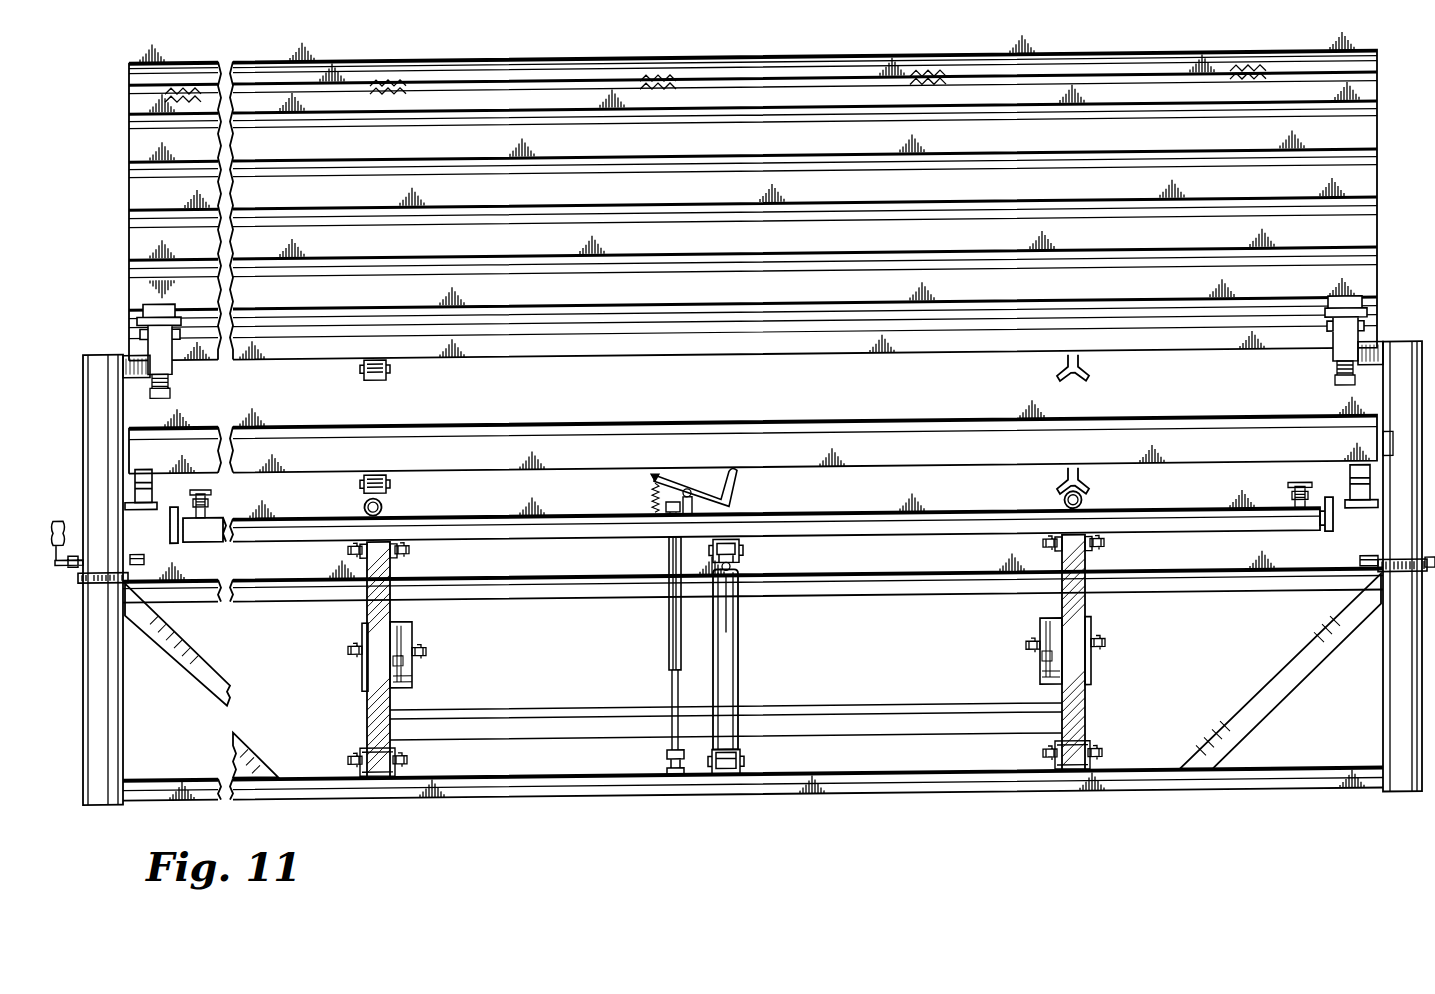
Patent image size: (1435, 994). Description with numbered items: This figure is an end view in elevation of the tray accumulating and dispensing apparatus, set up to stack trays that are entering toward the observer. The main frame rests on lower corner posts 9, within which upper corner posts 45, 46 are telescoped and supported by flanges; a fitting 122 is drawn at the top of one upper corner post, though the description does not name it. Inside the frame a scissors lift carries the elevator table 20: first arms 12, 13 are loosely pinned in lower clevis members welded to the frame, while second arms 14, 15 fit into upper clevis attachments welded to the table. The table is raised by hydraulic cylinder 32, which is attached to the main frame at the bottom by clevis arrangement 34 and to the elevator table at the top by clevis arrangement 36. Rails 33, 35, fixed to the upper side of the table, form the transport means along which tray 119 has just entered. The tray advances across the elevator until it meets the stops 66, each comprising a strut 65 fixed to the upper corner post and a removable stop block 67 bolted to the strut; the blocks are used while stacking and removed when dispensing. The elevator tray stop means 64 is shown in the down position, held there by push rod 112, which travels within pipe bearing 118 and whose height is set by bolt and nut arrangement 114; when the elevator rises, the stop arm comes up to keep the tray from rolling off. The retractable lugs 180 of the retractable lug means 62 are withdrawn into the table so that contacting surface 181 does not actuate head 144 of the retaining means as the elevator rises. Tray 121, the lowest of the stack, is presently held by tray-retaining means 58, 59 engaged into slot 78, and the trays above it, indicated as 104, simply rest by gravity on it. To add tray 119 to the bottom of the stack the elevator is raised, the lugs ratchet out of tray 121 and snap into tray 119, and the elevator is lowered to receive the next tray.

The lower corner post 9 is at (108, 716).
The first arm of the scissors lift 12 is at (372, 726).
The first arm of the scissors lift 13 is at (1083, 702).
The second arm of the scissors lift 14 is at (367, 613).
The second arm of the scissors lift 15 is at (1083, 607).
The elevator table 20 is at (946, 533).
The hydraulic cylinder 32 is at (737, 672).
The rail 33 is at (382, 511).
The clevis arrangement 34 is at (745, 763).
The rail 35 is at (1085, 511).
The clevis arrangement 36 is at (741, 556).
The upper corner post 45 is at (1402, 412).
The upper corner post 46 is at (112, 410).
The tray-retaining means 58 is at (178, 369).
The tray-retaining means 59 is at (1315, 367).
The retractable lug means 62 is at (206, 538).
The elevator table tray stop means 64 is at (733, 492).
The strut 65 is at (1380, 506).
The tray-stop means 66 is at (148, 481).
The stop block 67 is at (1392, 474).
The slot 78 is at (1117, 342).
The trays above the lowest tray 104 is at (1394, 164).
The push rod 112 is at (672, 683).
The bolt and nut arrangement 114 is at (665, 762).
The pipe bearing 118 is at (670, 623).
The tray 119 is at (1145, 446).
The tray 121 is at (1153, 346).
The post top mount 122 is at (1382, 343).
The head of the retaining means 144 is at (1333, 390).
The retractable lug 180 is at (1321, 538).
The contacting surface 181 is at (1297, 507).